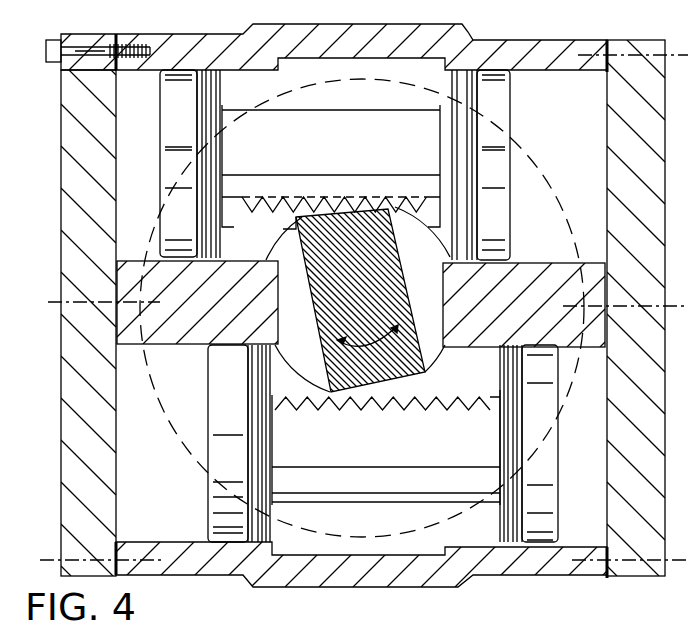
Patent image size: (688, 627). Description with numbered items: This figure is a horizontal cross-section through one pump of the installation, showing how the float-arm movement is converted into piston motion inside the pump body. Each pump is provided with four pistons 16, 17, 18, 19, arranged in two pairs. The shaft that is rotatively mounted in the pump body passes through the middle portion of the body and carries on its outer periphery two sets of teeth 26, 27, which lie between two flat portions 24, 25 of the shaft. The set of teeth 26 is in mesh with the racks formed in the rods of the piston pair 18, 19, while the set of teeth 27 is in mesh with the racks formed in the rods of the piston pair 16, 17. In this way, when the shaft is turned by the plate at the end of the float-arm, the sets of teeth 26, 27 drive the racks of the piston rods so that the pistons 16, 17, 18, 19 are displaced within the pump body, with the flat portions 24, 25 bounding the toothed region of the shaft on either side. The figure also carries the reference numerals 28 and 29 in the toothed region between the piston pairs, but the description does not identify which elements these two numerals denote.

The bearing 16 is at (543, 470).
The bearing 17 is at (217, 490).
The bearing 18 is at (493, 108).
The bearing 19 is at (173, 160).
The support block 24 is at (310, 297).
The tilted wobble gear 25 is at (410, 287).
The upper toothing 26 is at (300, 216).
The lower toothing 27 is at (428, 383).
The upper toothed roller 28 is at (435, 209).
The lower toothed roller 29 is at (447, 400).